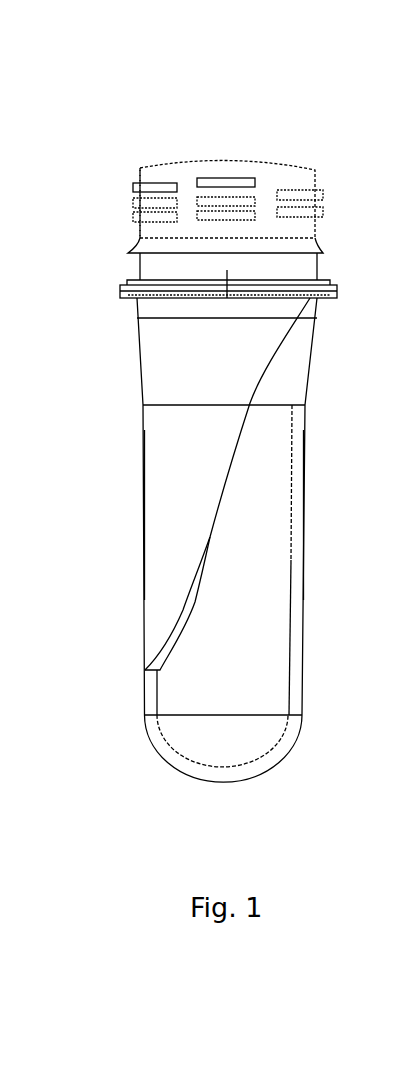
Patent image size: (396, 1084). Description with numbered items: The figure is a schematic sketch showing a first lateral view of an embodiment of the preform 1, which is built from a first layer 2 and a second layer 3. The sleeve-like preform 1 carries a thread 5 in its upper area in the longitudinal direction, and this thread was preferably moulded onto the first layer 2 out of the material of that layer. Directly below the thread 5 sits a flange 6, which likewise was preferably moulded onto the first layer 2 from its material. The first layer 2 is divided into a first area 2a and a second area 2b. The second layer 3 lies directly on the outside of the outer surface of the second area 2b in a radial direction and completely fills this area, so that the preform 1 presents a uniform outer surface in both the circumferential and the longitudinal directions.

The preform 1 is at (116, 179).
The first layer 2 is at (138, 592).
The first area 2a is at (158, 472).
The second area 2b is at (280, 463).
The second layer 3 is at (290, 582).
The thread 5 is at (319, 196).
The flange 6 is at (316, 288).